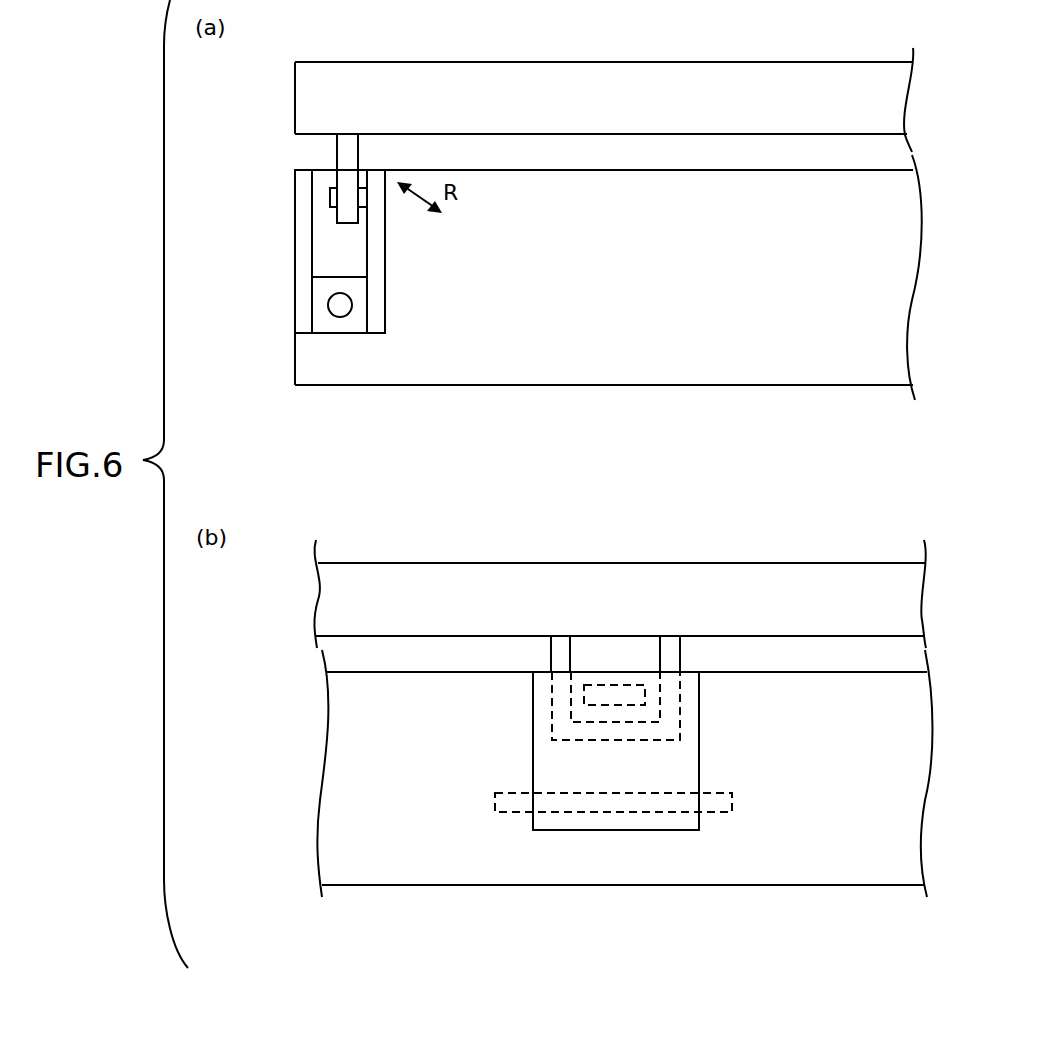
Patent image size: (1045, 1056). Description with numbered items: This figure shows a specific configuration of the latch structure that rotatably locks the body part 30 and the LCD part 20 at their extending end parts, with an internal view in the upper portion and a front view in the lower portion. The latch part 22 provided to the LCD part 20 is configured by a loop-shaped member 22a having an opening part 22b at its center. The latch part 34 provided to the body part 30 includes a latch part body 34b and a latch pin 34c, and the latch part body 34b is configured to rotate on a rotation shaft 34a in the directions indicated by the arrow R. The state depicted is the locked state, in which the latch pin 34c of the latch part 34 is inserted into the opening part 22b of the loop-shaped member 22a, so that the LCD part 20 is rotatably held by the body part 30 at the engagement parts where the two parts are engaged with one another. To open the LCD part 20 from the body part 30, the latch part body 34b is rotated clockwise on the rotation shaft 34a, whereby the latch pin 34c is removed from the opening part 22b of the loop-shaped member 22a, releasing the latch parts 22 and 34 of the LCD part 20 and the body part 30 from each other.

The LCD part 20 is at (778, 75).
The latch part 22 is at (326, 155).
The loop-shaped member 22a is at (551, 655).
The opening part 22b is at (660, 655).
The body part 30 is at (805, 378).
The latch part 34 is at (280, 197).
The rotation shaft 34a is at (340, 317).
The latch part body 34b is at (387, 249).
The latch pin 34c is at (330, 197).